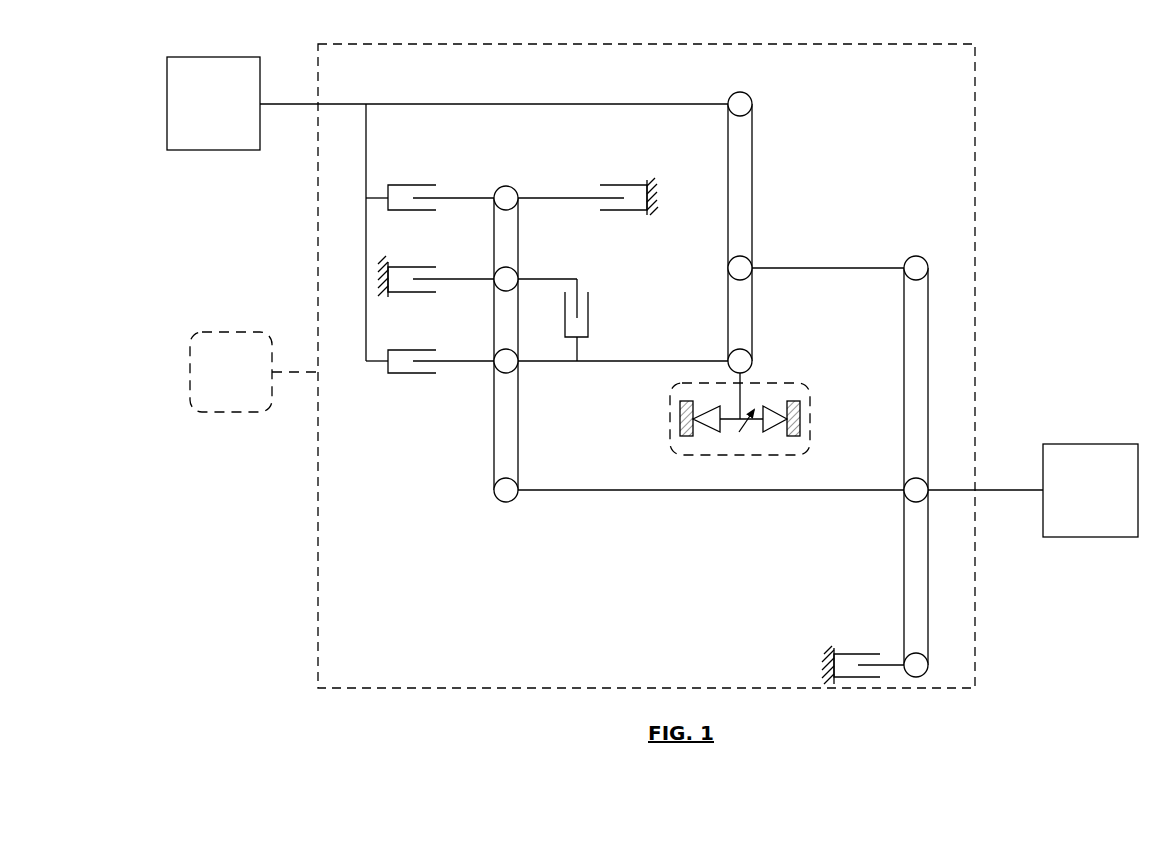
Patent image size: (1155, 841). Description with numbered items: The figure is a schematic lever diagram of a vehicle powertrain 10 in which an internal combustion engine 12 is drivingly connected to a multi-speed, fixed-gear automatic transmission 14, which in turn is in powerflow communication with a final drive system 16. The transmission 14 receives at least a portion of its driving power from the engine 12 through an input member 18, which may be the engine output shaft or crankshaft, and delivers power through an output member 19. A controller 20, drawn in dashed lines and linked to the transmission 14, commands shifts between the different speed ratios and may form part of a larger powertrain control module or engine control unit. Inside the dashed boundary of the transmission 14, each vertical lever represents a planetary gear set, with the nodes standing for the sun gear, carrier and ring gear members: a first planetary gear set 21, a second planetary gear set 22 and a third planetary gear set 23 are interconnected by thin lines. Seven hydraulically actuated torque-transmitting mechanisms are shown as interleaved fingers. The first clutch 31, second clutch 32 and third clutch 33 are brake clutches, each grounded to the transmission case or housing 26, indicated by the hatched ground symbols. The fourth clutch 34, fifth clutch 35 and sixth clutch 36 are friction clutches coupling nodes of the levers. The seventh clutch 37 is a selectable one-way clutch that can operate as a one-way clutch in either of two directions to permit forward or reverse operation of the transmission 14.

The powertrain 10 is at (1098, 98).
The internal combustion engine 12 is at (213, 103).
The transmission 14 is at (318, 520).
The final drive system 16 is at (1090, 490).
The input member 18 is at (298, 103).
The output member 19 is at (1003, 492).
The controller 20 is at (254, 372).
The first planetary gear set 21 is at (915, 236).
The second planetary gear set 22 is at (742, 84).
The third planetary gear set 23 is at (505, 526).
The housing 26 is at (660, 196).
The first clutch 31 is at (857, 652).
The second clutch 32 is at (420, 267).
The third clutch 33 is at (628, 212).
The fourth clutch 34 is at (590, 326).
The fifth clutch 35 is at (420, 184).
The sixth clutch 36 is at (413, 375).
The seventh clutch 37 is at (810, 433).